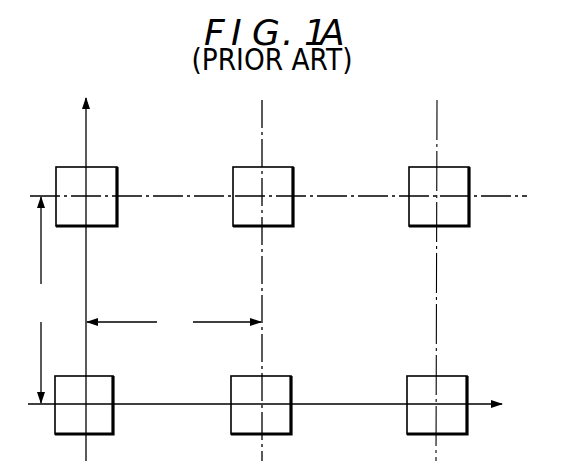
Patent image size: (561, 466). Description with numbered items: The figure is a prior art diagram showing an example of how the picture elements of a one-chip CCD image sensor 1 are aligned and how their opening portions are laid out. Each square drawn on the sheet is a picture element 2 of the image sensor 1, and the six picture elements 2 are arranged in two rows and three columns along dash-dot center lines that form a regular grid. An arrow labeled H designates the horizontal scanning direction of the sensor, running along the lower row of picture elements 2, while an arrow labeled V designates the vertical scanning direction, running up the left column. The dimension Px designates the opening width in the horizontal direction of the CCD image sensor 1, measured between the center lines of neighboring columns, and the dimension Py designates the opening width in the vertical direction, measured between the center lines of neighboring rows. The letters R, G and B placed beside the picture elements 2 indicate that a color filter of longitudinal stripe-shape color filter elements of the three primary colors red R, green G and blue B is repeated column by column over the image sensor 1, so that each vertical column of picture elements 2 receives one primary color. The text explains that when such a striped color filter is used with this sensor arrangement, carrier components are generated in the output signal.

The one-chip CCD image sensor 1 is at (58, 149).
The picture element 2 is at (262, 287).
The red color filter element R is at (86, 287).
The green color filter element G is at (262, 288).
The blue color filter element B is at (407, 395).
The vertical scanning direction V is at (86, 267).
The horizontal scanning direction H is at (274, 405).
The horizontal opening width Px is at (174, 322).
The vertical opening width Py is at (41, 300).